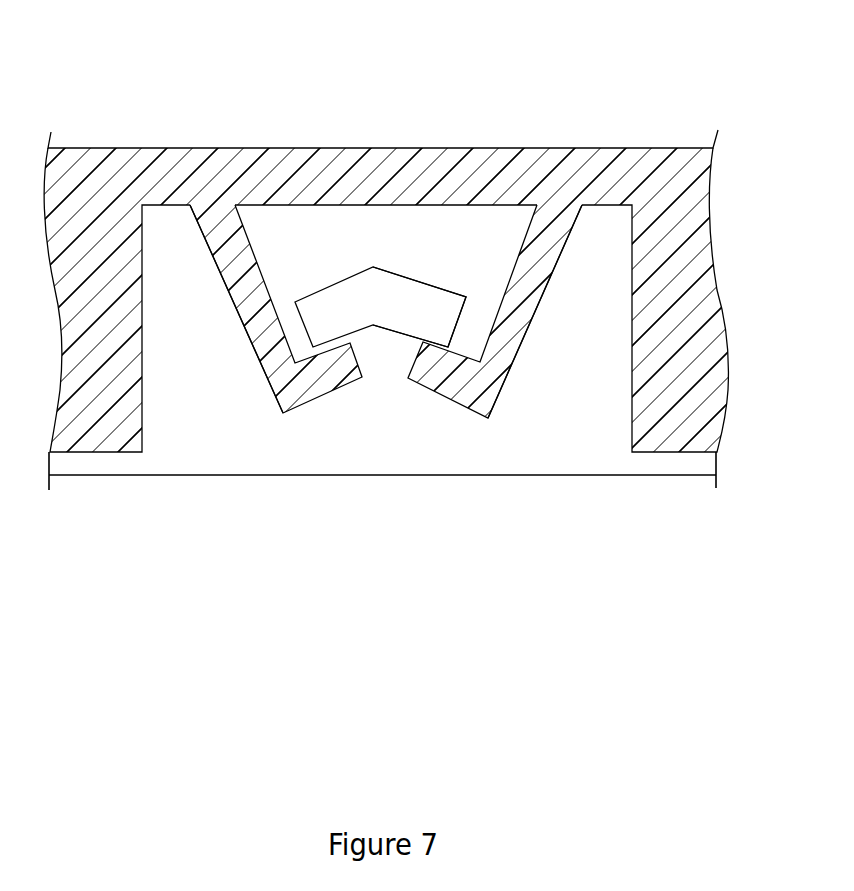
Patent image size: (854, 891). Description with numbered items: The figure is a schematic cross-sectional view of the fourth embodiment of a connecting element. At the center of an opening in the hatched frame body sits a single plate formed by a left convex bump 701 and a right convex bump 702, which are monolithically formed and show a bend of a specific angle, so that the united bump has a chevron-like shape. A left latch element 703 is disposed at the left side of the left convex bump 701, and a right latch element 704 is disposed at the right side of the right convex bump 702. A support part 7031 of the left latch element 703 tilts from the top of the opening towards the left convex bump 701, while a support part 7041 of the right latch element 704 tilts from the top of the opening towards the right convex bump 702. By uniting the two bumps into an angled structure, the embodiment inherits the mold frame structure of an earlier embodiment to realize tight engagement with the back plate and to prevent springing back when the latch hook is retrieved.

The left convex bump 701 is at (326, 282).
The right convex bump 702 is at (422, 278).
The left latch element 703 is at (297, 412).
The support part 7031 is at (225, 290).
The right latch element 704 is at (460, 402).
The support part 7041 is at (543, 300).